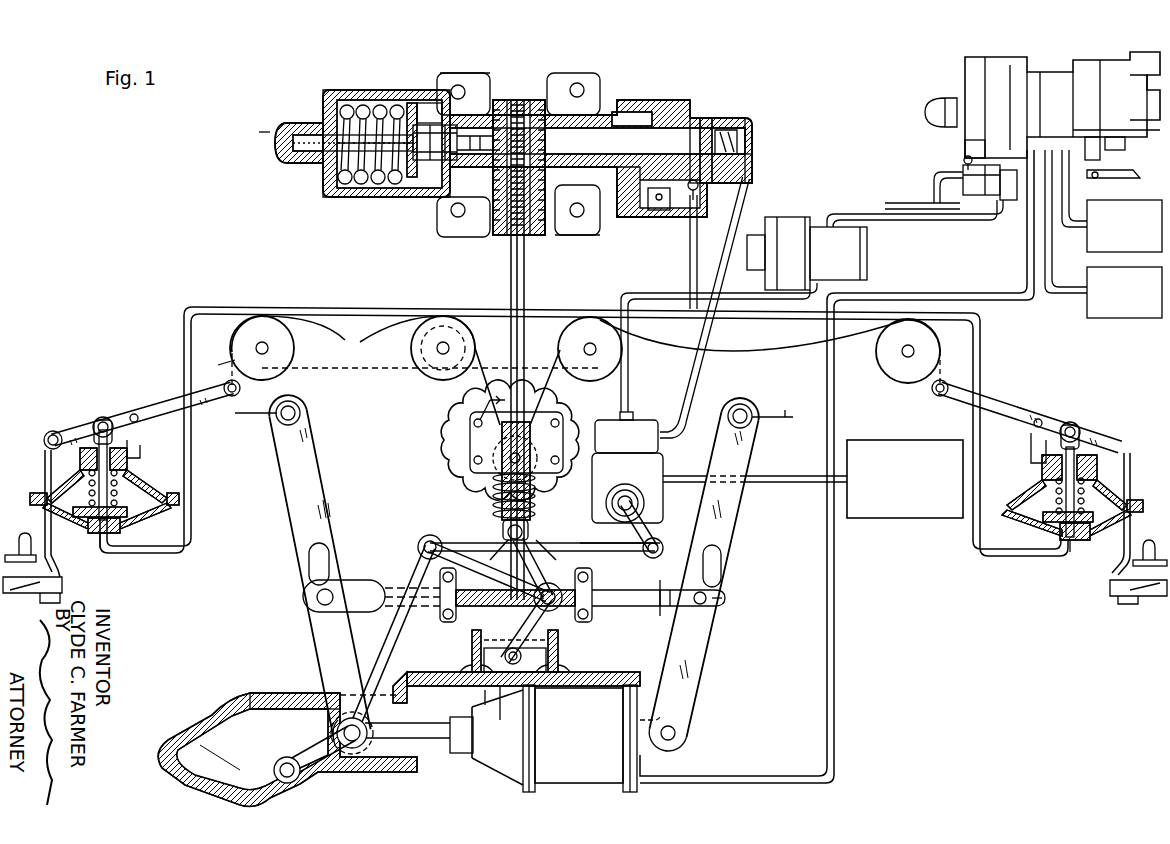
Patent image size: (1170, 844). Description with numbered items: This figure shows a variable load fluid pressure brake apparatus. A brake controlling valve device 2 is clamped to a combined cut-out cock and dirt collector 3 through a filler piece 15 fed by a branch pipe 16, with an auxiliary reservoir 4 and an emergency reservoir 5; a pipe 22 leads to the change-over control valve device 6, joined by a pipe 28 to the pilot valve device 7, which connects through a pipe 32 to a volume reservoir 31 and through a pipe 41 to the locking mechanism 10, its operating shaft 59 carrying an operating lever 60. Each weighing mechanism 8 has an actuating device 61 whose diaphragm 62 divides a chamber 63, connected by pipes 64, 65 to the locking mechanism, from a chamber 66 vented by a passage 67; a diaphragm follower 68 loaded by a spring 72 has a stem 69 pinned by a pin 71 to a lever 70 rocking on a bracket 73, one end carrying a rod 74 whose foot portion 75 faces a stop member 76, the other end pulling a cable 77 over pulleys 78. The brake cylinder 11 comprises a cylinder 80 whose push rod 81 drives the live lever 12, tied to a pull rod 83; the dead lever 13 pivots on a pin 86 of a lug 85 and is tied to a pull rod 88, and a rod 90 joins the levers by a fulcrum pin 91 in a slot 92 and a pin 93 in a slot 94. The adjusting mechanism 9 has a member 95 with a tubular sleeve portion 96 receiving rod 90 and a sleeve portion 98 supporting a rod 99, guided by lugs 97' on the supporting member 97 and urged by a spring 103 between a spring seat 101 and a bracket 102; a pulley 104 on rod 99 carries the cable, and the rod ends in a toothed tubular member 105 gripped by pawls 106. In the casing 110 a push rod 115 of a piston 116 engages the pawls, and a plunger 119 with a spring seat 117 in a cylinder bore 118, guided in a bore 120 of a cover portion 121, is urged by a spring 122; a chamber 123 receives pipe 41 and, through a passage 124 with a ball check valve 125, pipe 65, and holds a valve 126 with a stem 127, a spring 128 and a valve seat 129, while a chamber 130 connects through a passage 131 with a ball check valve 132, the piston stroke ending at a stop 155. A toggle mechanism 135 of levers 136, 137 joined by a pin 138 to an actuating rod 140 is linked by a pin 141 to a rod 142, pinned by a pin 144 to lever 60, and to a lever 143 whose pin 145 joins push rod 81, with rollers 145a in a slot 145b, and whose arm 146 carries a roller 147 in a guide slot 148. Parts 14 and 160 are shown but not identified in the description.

The brake controlling valve device 2 is at (263, 124).
The combined cut-out cock and centrifugal dirt collector 3 is at (955, 172).
The auxiliary reservoir 4 is at (1138, 194).
The emergency reservoir 5 is at (1128, 300).
The change-over control valve device 6 is at (873, 254).
The pilot valve device 7 is at (670, 452).
The weighing mechanism 8 is at (170, 506).
The adjusting mechanism 9 is at (546, 514).
The locking mechanism 10 is at (588, 68).
The brake cylinder 11 is at (556, 785).
The live cylinder lever 12 is at (320, 520).
The dead cylinder lever 13 is at (740, 520).
The coupling 14 is at (435, 153).
The filler piece 15 is at (1008, 196).
The branch pipe 16 is at (904, 181).
The pipe 22 is at (980, 214).
The pipe 28 is at (755, 275).
The volume reservoir 31 is at (918, 510).
The pipe 32 is at (800, 478).
The pipe 41 is at (690, 376).
The operating shaft 59 is at (644, 500).
The operating lever 60 is at (650, 512).
The actuating device 61 is at (150, 485).
The diaphragm 62 is at (112, 507).
The chamber 63 is at (90, 525).
The pipe 64 is at (165, 553).
The pipe 65 is at (697, 250).
The chamber 66 is at (128, 460).
The passage 67 is at (70, 480).
The diaphragm follower 68 is at (88, 503).
The stem 69 is at (110, 418).
The lever 70 is at (162, 405).
The pin 71 is at (102, 418).
The spring 72 is at (125, 522).
The bracket 73 is at (140, 436).
The rod 74 is at (45, 455).
The foot portion 75 is at (25, 588).
The stop member 76 is at (586, 549).
The cable 77 is at (230, 365).
The pulleys 78 is at (294, 352).
The cylinder 80 is at (598, 785).
The push rod 81 is at (440, 742).
The pull rod 83 is at (255, 414).
The lug 85 is at (648, 718).
The pin 86 is at (676, 733).
The pull rod 88 is at (792, 418).
The rod 90 is at (660, 616).
The fulcrum pin 91 is at (318, 598).
The longitudinal slot 92 is at (309, 552).
The pin 93 is at (724, 600).
The longitudinal slot 94 is at (722, 563).
The horizontally movable member 95 is at (588, 562).
The tubular sleeve portion 96 is at (560, 615).
The brake cylinder supporting member 97 is at (526, 665).
The spaced lugs 97' is at (512, 651).
The sleeve portion 98 is at (540, 548).
The rod 99 is at (524, 338).
The spring seat 101 is at (460, 688).
The bracket 102 is at (500, 440).
The spring 103 is at (493, 490).
The pulley 104 is at (455, 472).
The tubular member 105 is at (508, 115).
The locking plates or pawls 106 is at (470, 150).
The casing 110 is at (445, 80).
The push rod 115 is at (577, 203).
The piston 116 is at (700, 118).
The spring seat or collar 117 is at (410, 102).
The cylinder bore 118 is at (360, 198).
The plunger or push rod 119 is at (350, 105).
The bore 120 is at (285, 158).
The cover portion 121 is at (300, 180).
The spring 122 is at (335, 190).
The chamber 123 is at (706, 118).
The passage 124 is at (698, 182).
The ball check valve 125 is at (700, 190).
The valve 126 is at (745, 128).
The valve stem 127 is at (728, 128).
The spring 128 is at (752, 145).
The valve seat 129 is at (633, 169).
The chamber 130 is at (625, 100).
The passage 131 is at (645, 205).
The ball check valve 132 is at (660, 210).
The toggle mechanism 135 is at (560, 650).
The lever 136 is at (515, 690).
The lever 137 is at (560, 560).
The pin 138 is at (600, 594).
The actuating rod 140 is at (516, 595).
The pin 141 is at (420, 538).
The rod 142 is at (458, 542).
The lever 143 is at (395, 620).
The pin 144 is at (652, 529).
The pin 145 is at (358, 748).
The rollers 145a is at (335, 732).
The guide slot 145b is at (305, 688).
The arm 146 is at (312, 772).
The roller 147 is at (255, 800).
The guide slot 148 is at (180, 742).
The stop 155 is at (608, 178).
The pipe 160 is at (834, 722).